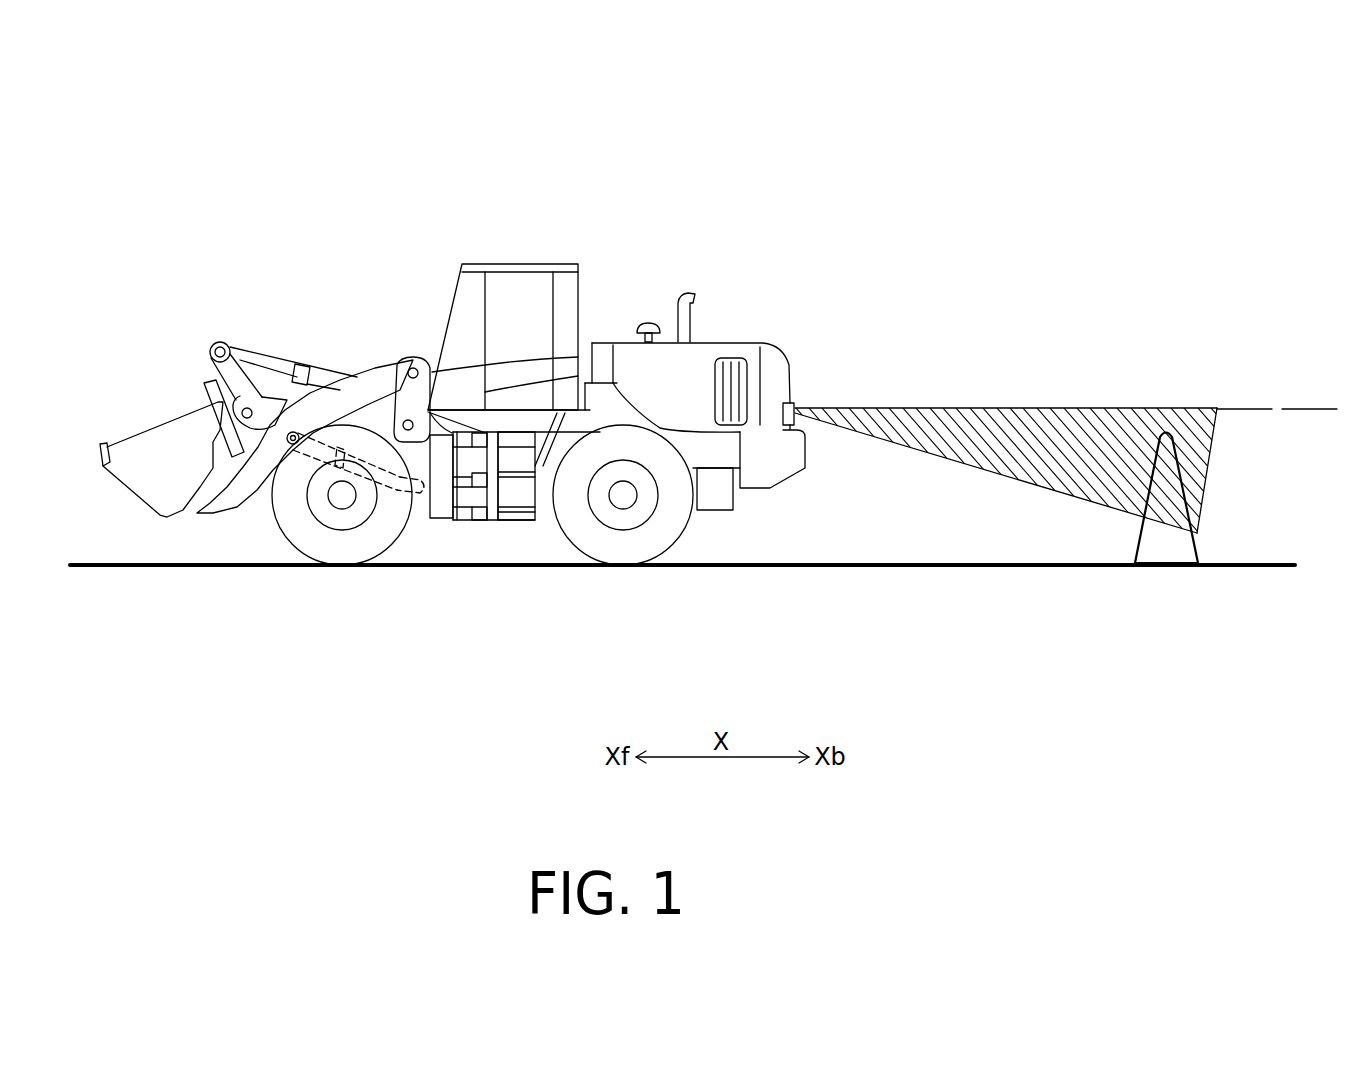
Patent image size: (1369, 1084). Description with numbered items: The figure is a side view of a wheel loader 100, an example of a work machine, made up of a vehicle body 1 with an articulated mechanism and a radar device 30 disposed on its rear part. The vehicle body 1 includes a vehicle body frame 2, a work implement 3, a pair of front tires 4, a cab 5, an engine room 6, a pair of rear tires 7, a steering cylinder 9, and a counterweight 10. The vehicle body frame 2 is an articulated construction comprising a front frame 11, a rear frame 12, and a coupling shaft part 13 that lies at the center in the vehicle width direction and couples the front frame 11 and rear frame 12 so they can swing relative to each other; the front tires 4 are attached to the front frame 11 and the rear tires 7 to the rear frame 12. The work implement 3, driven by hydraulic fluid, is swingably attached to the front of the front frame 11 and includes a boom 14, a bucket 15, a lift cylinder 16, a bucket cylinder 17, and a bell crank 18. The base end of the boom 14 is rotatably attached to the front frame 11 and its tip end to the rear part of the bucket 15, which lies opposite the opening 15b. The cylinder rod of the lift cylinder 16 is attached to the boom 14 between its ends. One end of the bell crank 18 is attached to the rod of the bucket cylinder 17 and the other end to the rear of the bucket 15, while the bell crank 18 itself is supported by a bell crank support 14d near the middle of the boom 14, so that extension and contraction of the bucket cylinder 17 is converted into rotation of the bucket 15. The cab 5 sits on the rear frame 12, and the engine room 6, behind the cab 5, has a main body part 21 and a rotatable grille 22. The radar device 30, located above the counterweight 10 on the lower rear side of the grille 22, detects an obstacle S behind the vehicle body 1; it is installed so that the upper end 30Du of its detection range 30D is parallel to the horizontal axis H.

The wheel loader 100 is at (580, 163).
The vehicle body 1 is at (391, 256).
The vehicle body frame 2 is at (519, 538).
The work implement 3 is at (217, 338).
The front tires 4 is at (338, 550).
The cab 5 is at (533, 263).
The engine room 6 is at (697, 342).
The rear tires 7 is at (633, 548).
The steering cylinder 9 is at (472, 520).
The counterweight 10 is at (770, 457).
The front frame 11 is at (414, 520).
The rear frame 12 is at (550, 520).
The coupling shaft part 13 is at (468, 520).
The boom 14 is at (317, 410).
The bell crank support 14d is at (270, 405).
The bucket 15 is at (107, 440).
The opening 15b is at (170, 427).
The lift cylinder 16 is at (303, 450).
The bucket cylinder 17 is at (268, 405).
The bell crank 18 is at (233, 372).
The main body part 21 is at (736, 356).
The grille 22 is at (772, 348).
The radar device 30 is at (793, 405).
The upper end of detection range 30Du is at (981, 408).
The detection range 30D is at (1056, 465).
The horizontal axis H is at (1291, 409).
The obstacle S is at (1178, 550).